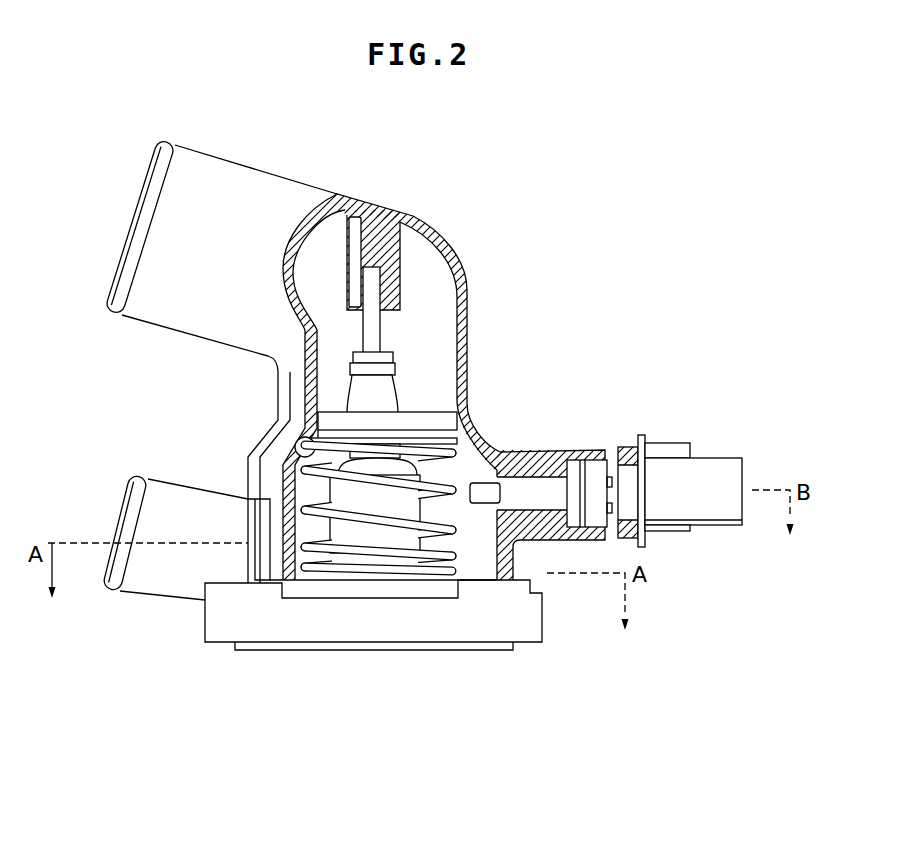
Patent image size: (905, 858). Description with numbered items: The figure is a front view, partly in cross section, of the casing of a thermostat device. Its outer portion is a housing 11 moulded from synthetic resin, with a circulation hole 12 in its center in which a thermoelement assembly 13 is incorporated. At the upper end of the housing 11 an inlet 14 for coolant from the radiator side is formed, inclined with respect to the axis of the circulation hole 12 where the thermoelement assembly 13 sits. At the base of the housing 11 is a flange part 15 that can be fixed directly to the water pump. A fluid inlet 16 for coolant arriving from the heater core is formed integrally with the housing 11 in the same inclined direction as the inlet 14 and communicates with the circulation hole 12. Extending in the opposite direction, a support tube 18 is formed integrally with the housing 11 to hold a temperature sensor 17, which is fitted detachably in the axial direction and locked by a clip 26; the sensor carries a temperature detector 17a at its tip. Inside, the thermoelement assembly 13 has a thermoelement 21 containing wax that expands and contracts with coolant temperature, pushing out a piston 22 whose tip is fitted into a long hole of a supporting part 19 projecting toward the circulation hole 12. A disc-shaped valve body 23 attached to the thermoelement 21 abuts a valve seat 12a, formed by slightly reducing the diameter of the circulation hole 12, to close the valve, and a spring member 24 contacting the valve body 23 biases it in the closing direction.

The housing 11 is at (245, 473).
The circulation hole 12 is at (427, 370).
The valve seat 12a is at (297, 447).
The thermoelement assembly 13 is at (463, 547).
The inlet 14 is at (125, 238).
The flange part 15 is at (535, 615).
The fluid inlet 16 is at (112, 508).
The temperature sensor 17 is at (676, 425).
The temperature detector 17a is at (482, 445).
The support tube 18 is at (583, 452).
The supporting part 19 is at (347, 265).
The thermoelement 21 is at (343, 540).
The piston 22 is at (377, 327).
The valve body 23 is at (440, 403).
The spring member 24 is at (387, 550).
The clip 26 is at (623, 440).